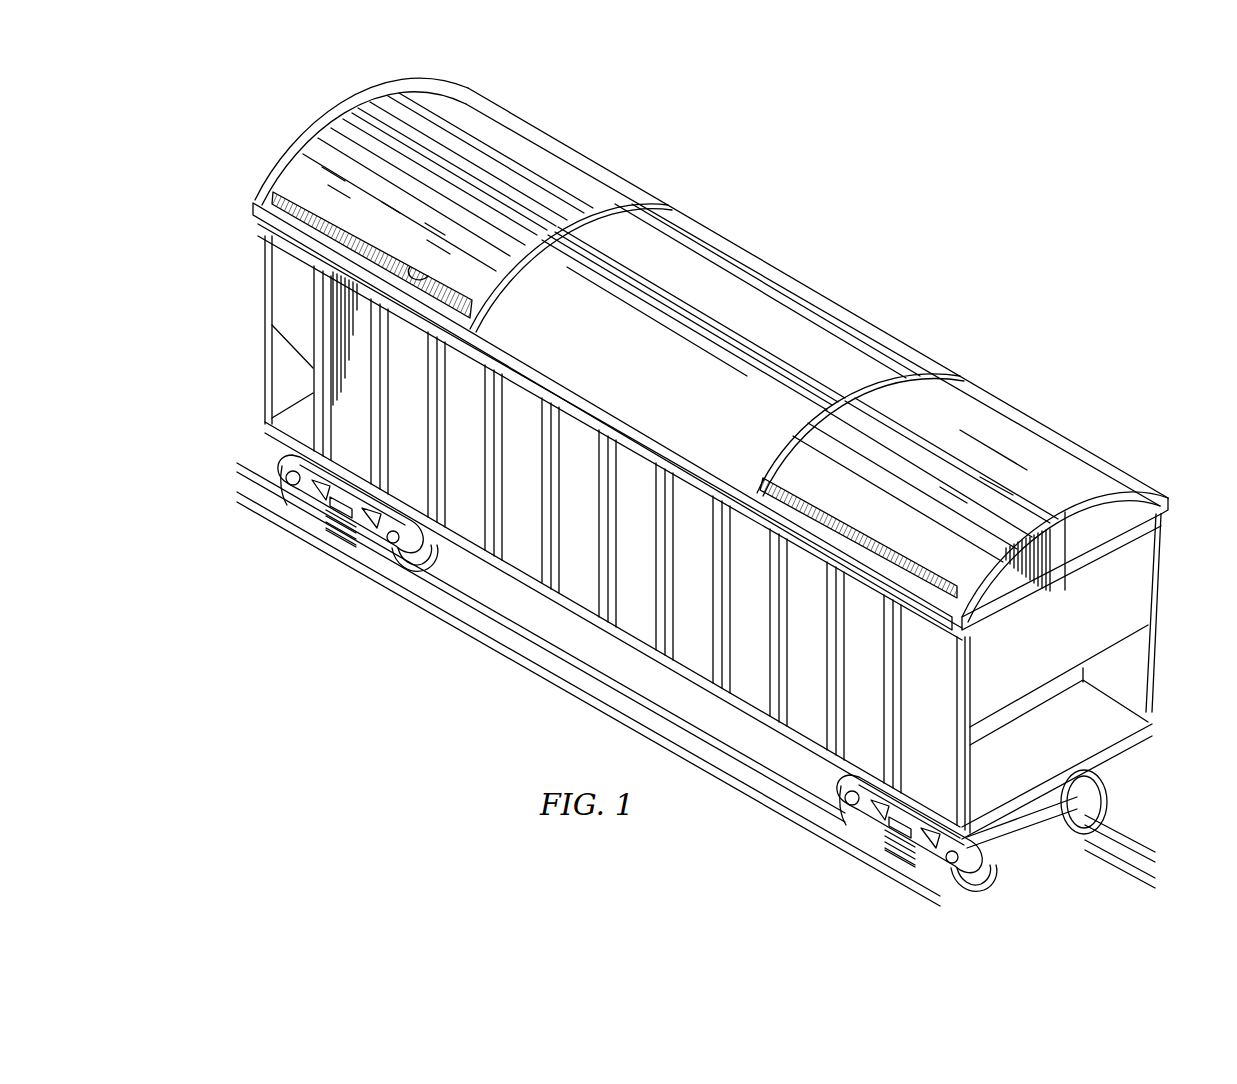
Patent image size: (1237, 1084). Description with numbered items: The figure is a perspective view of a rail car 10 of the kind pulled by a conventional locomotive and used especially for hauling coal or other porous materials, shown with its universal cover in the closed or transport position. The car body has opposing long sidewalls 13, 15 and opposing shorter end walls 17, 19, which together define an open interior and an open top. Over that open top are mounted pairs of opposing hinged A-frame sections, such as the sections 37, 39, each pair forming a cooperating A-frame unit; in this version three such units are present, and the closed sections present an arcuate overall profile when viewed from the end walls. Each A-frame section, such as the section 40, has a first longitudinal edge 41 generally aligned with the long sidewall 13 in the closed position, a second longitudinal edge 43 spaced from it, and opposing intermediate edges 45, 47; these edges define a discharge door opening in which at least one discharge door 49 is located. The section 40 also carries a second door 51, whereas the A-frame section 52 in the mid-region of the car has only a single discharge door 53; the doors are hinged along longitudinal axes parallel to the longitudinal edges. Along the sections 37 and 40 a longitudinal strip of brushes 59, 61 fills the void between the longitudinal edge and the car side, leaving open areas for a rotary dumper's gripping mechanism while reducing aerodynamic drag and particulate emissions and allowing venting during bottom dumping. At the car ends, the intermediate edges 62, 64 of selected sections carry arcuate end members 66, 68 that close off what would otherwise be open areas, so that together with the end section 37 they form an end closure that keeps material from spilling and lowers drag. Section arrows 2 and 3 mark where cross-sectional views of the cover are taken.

The rail car 10 is at (938, 205).
The long sidewall 13 is at (698, 505).
The long sidewall 15 is at (706, 222).
The end wall 17 is at (1147, 612).
The end wall 19 is at (262, 296).
The A-frame section 37 is at (921, 483).
The A-frame section 39 is at (985, 436).
The A-frame section 40 is at (306, 186).
The first longitudinal edge 41 is at (418, 264).
The second longitudinal edge 43 is at (440, 166).
The intermediate edge 45 is at (303, 152).
The intermediate edge 47 is at (490, 302).
The discharge door 49 is at (496, 272).
The second door 51 is at (347, 136).
The A-frame section 52 is at (683, 364).
The discharge door 53 is at (792, 378).
The strip of brushes 59 is at (854, 522).
The strip of brushes 61 is at (375, 246).
The intermediate edge 62 is at (986, 582).
The intermediate edge 64 is at (1086, 497).
The arcuate end member 66 is at (999, 600).
The arcuate end member 68 is at (1088, 553).
The section line 2- 2 is at (1118, 427).
The section line 3- 3 is at (884, 292).